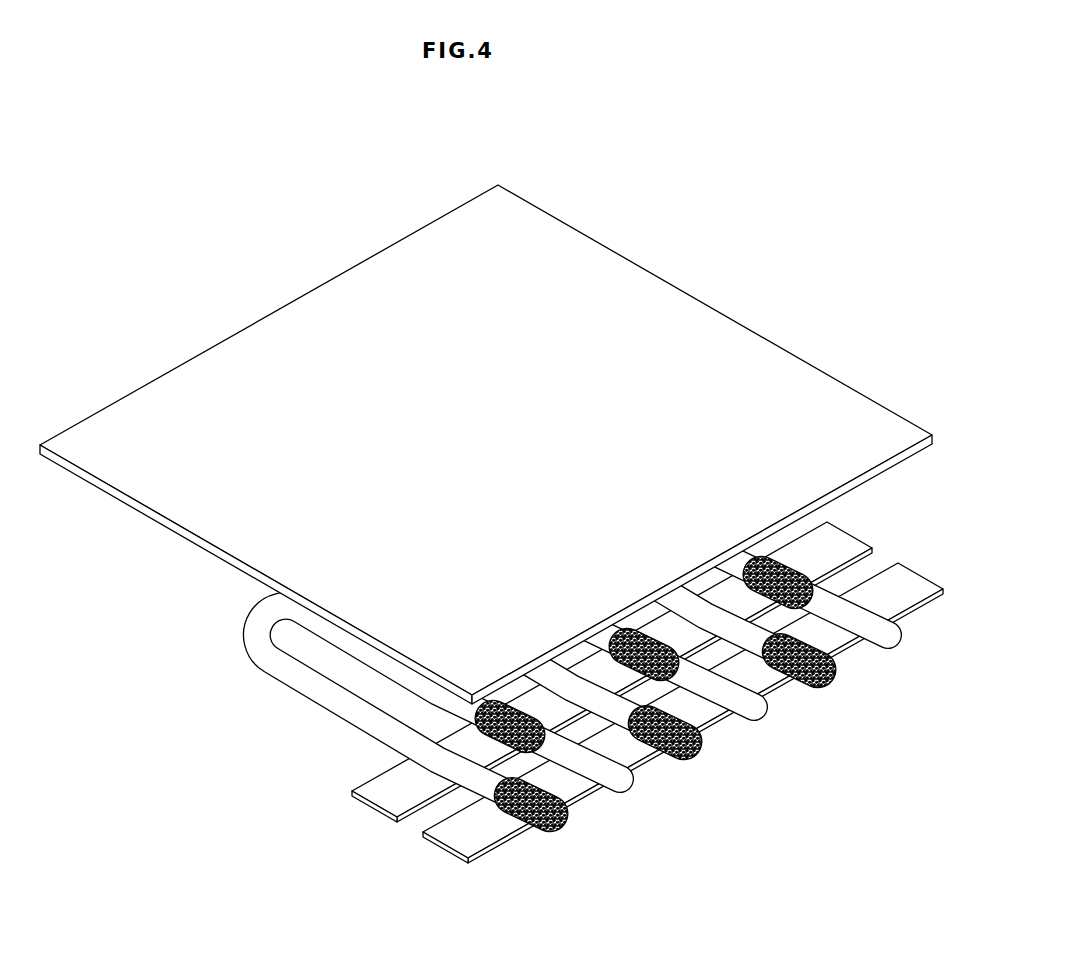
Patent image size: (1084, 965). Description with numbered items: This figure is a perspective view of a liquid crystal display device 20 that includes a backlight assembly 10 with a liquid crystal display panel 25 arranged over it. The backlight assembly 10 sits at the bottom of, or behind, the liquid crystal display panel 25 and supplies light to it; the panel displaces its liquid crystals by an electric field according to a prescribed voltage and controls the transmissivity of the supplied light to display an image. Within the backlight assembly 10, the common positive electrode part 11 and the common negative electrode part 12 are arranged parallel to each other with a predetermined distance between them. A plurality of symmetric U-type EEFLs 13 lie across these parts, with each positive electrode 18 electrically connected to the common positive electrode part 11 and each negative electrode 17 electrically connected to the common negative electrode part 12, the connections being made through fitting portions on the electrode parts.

The liquid crystal display device 20 is at (224, 150).
The liquid crystal display panel 25 is at (690, 323).
The symmetric U-type EEFL 13 is at (232, 634).
The negative electrode 17 is at (833, 660).
The positive electrode 18 is at (800, 578).
The backlight assembly 10 is at (581, 711).
The common positive electrode part 11 is at (403, 789).
The common negative electrode part 12 is at (468, 833).